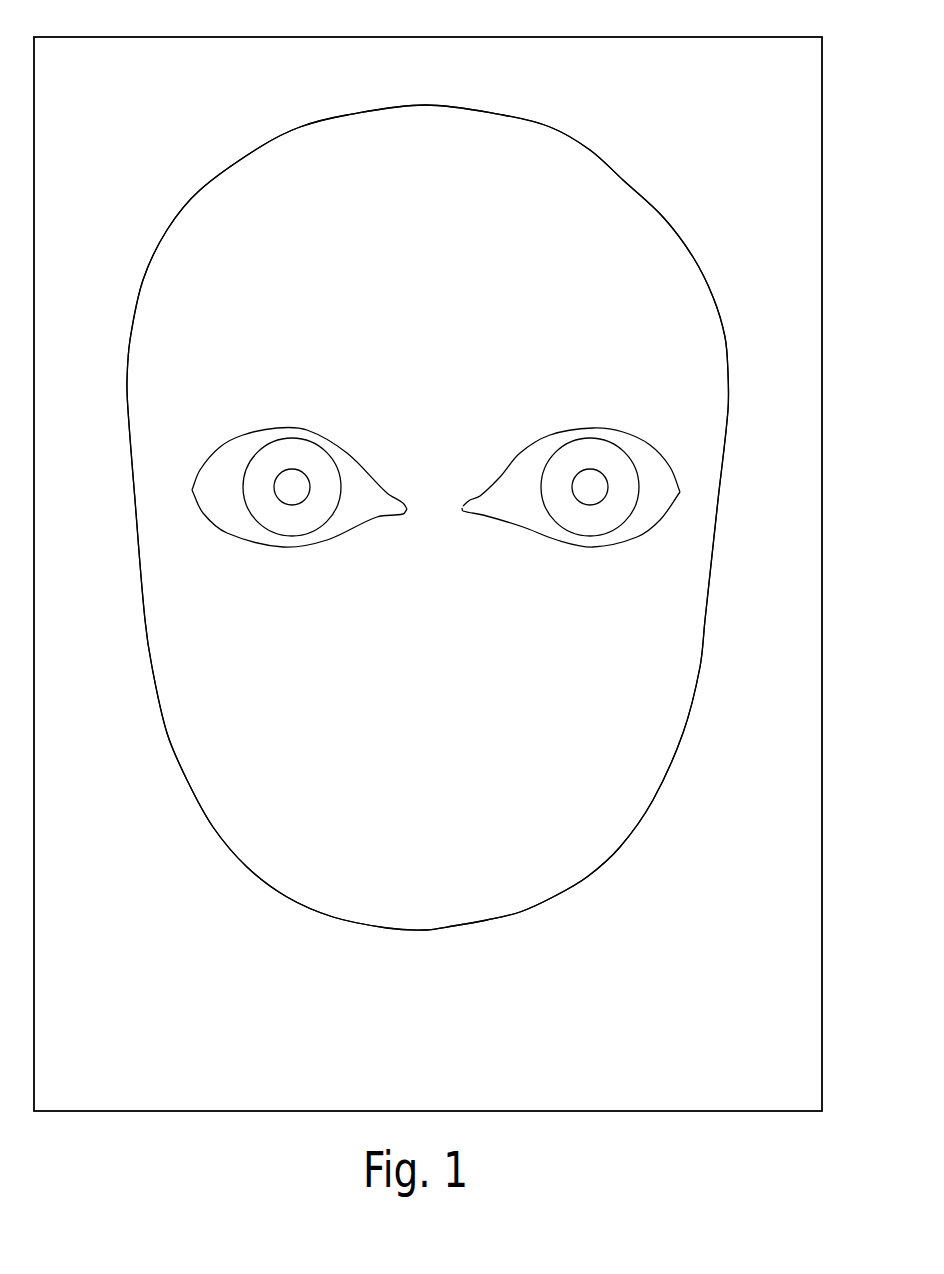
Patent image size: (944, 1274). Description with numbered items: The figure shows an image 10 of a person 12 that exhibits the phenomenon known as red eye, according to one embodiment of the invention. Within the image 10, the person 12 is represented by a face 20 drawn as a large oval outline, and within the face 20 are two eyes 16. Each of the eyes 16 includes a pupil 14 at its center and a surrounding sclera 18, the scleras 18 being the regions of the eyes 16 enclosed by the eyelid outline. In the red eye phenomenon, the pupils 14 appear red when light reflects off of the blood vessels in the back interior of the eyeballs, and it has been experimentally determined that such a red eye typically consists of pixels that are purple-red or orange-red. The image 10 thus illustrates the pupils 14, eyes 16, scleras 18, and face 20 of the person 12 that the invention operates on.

The image 10 is at (822, 37).
The person 12 is at (681, 150).
The pupils 14 is at (273, 486).
The eyes 16 is at (293, 453).
The scleras 18 is at (232, 518).
The face 20 is at (690, 353).